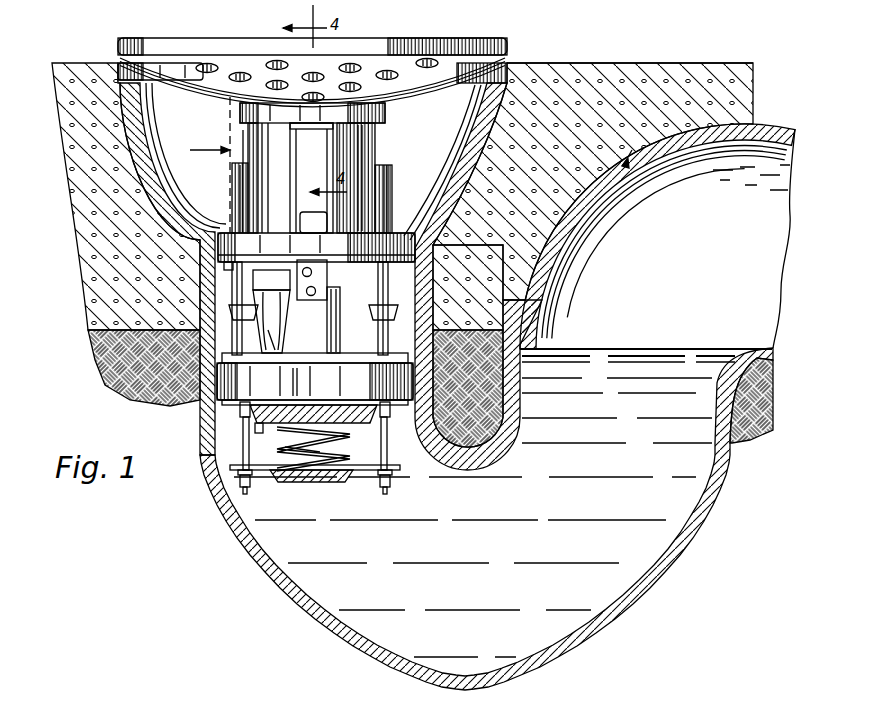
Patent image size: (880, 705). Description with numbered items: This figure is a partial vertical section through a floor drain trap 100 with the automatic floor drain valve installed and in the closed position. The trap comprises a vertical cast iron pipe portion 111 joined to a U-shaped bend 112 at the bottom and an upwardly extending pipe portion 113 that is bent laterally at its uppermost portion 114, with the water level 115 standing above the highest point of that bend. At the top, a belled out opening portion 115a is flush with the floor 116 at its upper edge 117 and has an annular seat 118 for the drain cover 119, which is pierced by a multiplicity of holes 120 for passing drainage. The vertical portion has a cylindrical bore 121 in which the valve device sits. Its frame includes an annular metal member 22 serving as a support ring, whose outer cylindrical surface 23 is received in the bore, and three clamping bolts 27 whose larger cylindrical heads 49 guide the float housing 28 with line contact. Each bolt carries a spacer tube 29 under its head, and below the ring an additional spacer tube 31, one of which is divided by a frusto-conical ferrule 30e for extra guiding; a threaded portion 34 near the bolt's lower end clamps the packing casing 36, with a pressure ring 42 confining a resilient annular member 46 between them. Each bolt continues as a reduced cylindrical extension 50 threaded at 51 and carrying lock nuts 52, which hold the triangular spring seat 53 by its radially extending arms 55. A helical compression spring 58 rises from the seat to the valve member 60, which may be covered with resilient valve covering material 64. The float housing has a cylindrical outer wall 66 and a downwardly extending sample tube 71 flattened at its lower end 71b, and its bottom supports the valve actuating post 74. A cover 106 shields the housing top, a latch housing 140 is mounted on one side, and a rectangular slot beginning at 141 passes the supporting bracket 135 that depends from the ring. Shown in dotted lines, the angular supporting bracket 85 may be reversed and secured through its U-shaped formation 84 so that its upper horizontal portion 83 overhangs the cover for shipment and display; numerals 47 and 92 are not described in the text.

The floor drain trap 100 is at (615, 148).
The cover 106 is at (386, 109).
The vertical cast iron pipe portion 111 is at (200, 402).
The U-shaped bend 112 is at (510, 673).
The upwardly extending pipe portion 113 is at (520, 411).
The laterally bent uppermost portion 114 is at (776, 126).
The water level 115 is at (649, 350).
The belled out opening portion 115a is at (142, 146).
The floor 116 is at (605, 63).
The upper edge 117 is at (537, 63).
The annular seat 118 is at (505, 66).
The drain cover 119 is at (409, 52).
The holes 120 is at (240, 73).
The cylindrical bore 121 is at (250, 278).
The supporting bracket 135 is at (340, 304).
The latch housing 140 is at (300, 168).
The rectangular slot 141 is at (300, 219).
The annular metal member 22 is at (378, 252).
The outer cylindrical surface 23 is at (415, 253).
The clamping bolts 27 is at (246, 495).
The float housing 28 is at (370, 141).
The spacer tube 29 is at (392, 179).
The frusto-conical ferrule 30e is at (232, 312).
The additional spacer tube 31 is at (233, 298).
The threaded portion 34 is at (243, 407).
The packing casing 36 is at (328, 362).
The pressure ring 42 is at (268, 402).
The resilient annular member 46 is at (286, 404).
The passage 47 is at (293, 368).
The cylindrical heads 49 is at (392, 169).
The cylindrical extension 50 is at (243, 433).
The threaded lower end 51 is at (250, 489).
The lock nuts 52 is at (252, 476).
The spring seat 53 is at (325, 482).
The radially extending arms 55 is at (275, 464).
The helical compression spring 58 is at (310, 455).
The valve member 60 is at (332, 441).
The valve covering material 64 is at (258, 433).
The cylindrical outer wall 66 is at (376, 150).
The sample tube 71 is at (283, 323).
The flattened lower end 71b is at (275, 336).
The valve actuating post 74 is at (321, 314).
The upper horizontal portion 83 is at (230, 102).
The U-shaped formation 84 is at (235, 266).
The angular supporting bracket 85 is at (200, 151).
The pivot block 92 is at (312, 280).